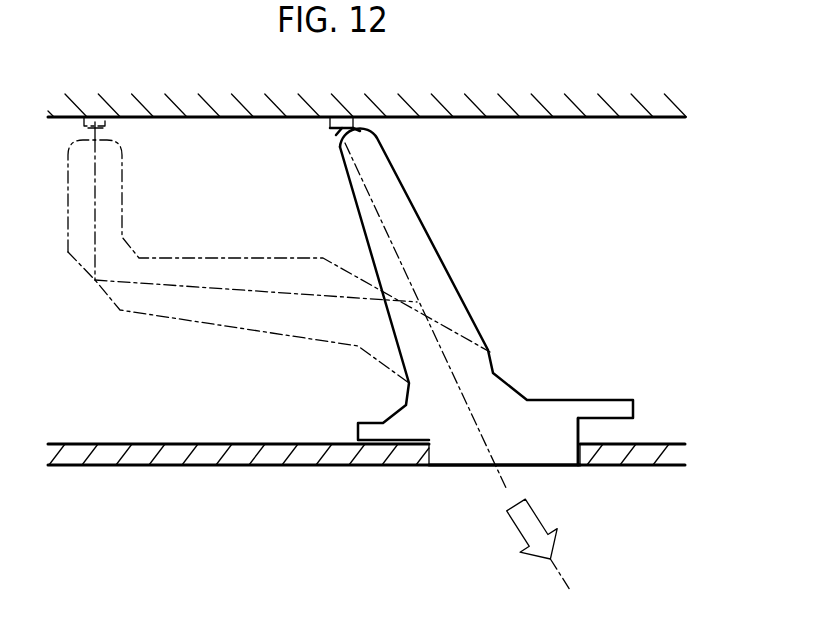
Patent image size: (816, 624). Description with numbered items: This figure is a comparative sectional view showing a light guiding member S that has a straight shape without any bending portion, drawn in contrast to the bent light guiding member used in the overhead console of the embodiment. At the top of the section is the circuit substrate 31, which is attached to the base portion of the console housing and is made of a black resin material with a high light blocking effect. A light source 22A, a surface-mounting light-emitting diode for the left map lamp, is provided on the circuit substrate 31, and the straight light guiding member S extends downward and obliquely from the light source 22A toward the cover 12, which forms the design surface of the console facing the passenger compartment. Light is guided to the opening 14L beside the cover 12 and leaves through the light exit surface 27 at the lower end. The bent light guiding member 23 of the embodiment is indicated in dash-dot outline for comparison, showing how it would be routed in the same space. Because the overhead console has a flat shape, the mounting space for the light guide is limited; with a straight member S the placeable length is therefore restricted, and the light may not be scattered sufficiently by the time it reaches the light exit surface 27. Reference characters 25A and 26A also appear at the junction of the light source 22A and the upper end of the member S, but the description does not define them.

The cover 12 is at (340, 457).
The opening 14L is at (578, 457).
The light source 22A is at (330, 123).
The light guiding member 23 is at (238, 325).
The light emitting portion 25A is at (338, 131).
The light receiving portion 26A is at (358, 128).
The light exit surface 27 is at (462, 467).
The circuit substrate 31 is at (530, 103).
The light guiding member S is at (428, 268).